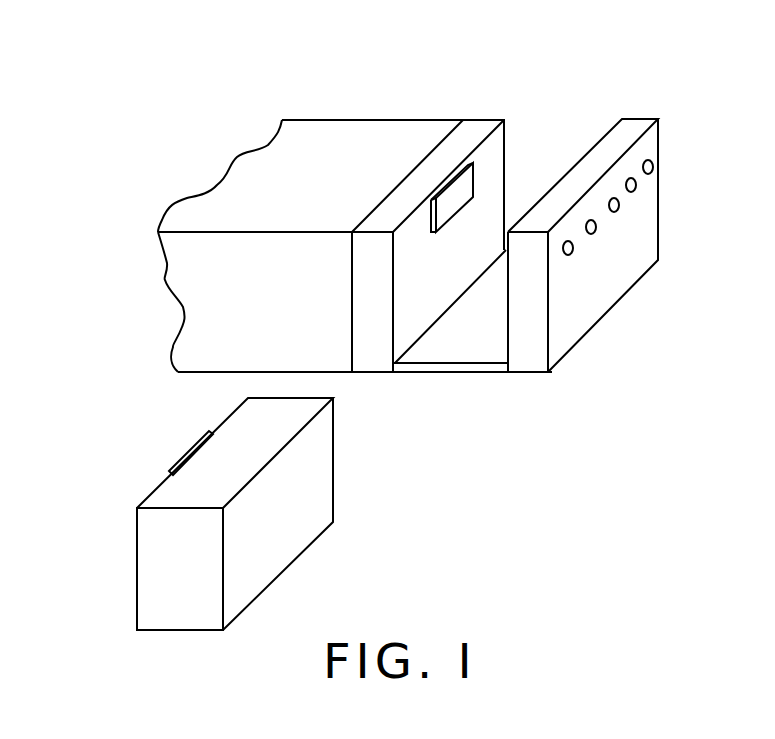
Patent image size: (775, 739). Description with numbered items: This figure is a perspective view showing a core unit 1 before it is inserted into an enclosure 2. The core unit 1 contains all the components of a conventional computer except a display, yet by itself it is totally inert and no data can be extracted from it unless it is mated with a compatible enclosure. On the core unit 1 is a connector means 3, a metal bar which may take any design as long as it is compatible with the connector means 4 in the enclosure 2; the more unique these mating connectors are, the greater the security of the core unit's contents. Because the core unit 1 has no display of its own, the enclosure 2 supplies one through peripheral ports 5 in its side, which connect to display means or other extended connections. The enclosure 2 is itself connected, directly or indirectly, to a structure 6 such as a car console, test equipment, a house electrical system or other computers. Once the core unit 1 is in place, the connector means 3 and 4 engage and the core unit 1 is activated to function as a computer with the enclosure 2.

The core unit 1 is at (334, 462).
The enclosure 2 is at (480, 122).
The connector means 3 is at (188, 453).
The connector means 4 is at (467, 183).
The peripheral ports 5 is at (650, 164).
The structure 6 is at (364, 128).